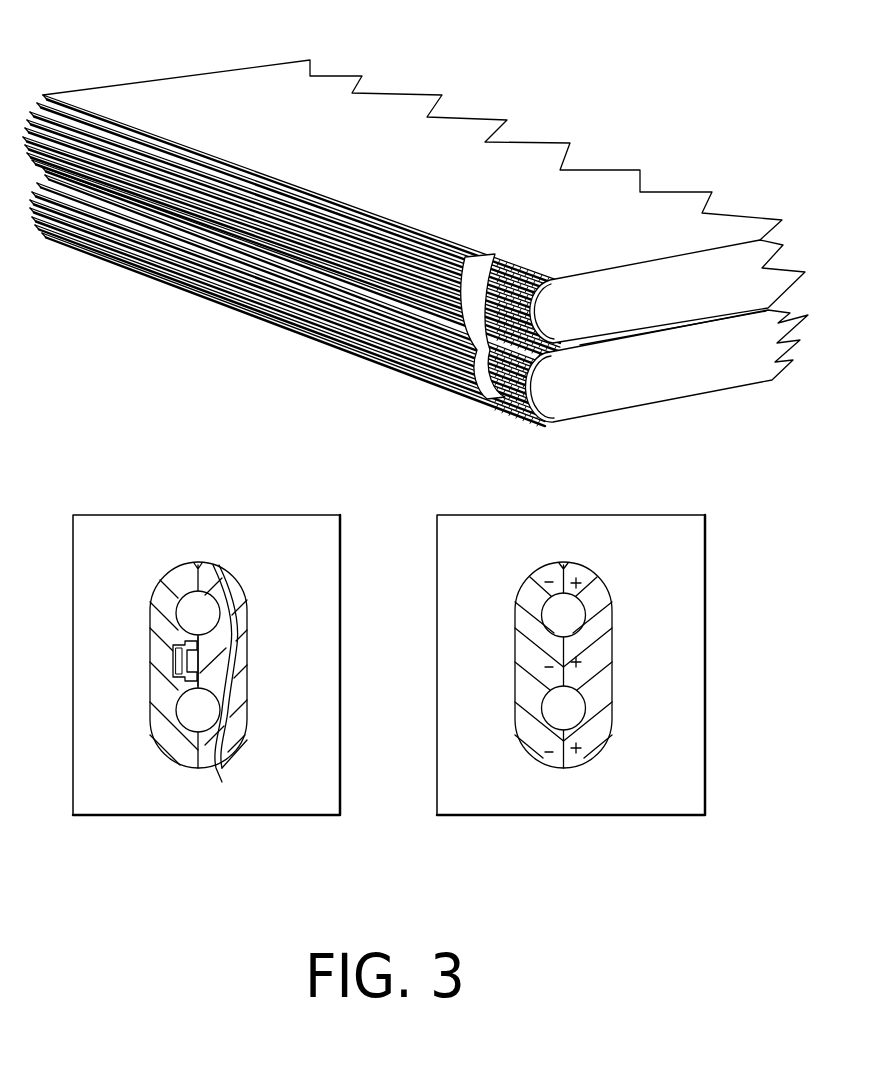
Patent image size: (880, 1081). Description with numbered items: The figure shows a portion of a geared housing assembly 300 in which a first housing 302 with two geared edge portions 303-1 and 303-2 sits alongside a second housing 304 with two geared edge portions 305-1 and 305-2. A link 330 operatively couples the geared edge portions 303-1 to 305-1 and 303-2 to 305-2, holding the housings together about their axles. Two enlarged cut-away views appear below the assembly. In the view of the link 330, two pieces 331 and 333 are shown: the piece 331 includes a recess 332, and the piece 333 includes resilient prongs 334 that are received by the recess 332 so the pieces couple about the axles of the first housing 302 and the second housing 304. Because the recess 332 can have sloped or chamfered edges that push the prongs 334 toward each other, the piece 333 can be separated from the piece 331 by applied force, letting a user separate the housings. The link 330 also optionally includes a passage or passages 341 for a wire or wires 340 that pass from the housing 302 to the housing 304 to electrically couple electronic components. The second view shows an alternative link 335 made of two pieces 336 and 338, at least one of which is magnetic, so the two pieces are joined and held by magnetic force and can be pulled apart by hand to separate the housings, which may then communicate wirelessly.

The assembly 300 is at (161, 35).
The first housing 302 is at (530, 143).
The geared edge portion 303-1 is at (520, 270).
The geared edge portion 303-2 is at (405, 238).
The second housing 304 is at (613, 400).
The geared edge portion 305-1 is at (505, 397).
The geared edge portion 305-2 is at (398, 353).
The link 330 is at (475, 360).
The piece 331 is at (168, 755).
The recess 332 is at (173, 678).
The piece 333 is at (230, 748).
The resilient prongs 334 is at (198, 668).
The link 335 is at (620, 553).
The piece 336 is at (532, 753).
The piece 338 is at (600, 750).
The wire 340 is at (212, 573).
The passage 341 is at (246, 590).